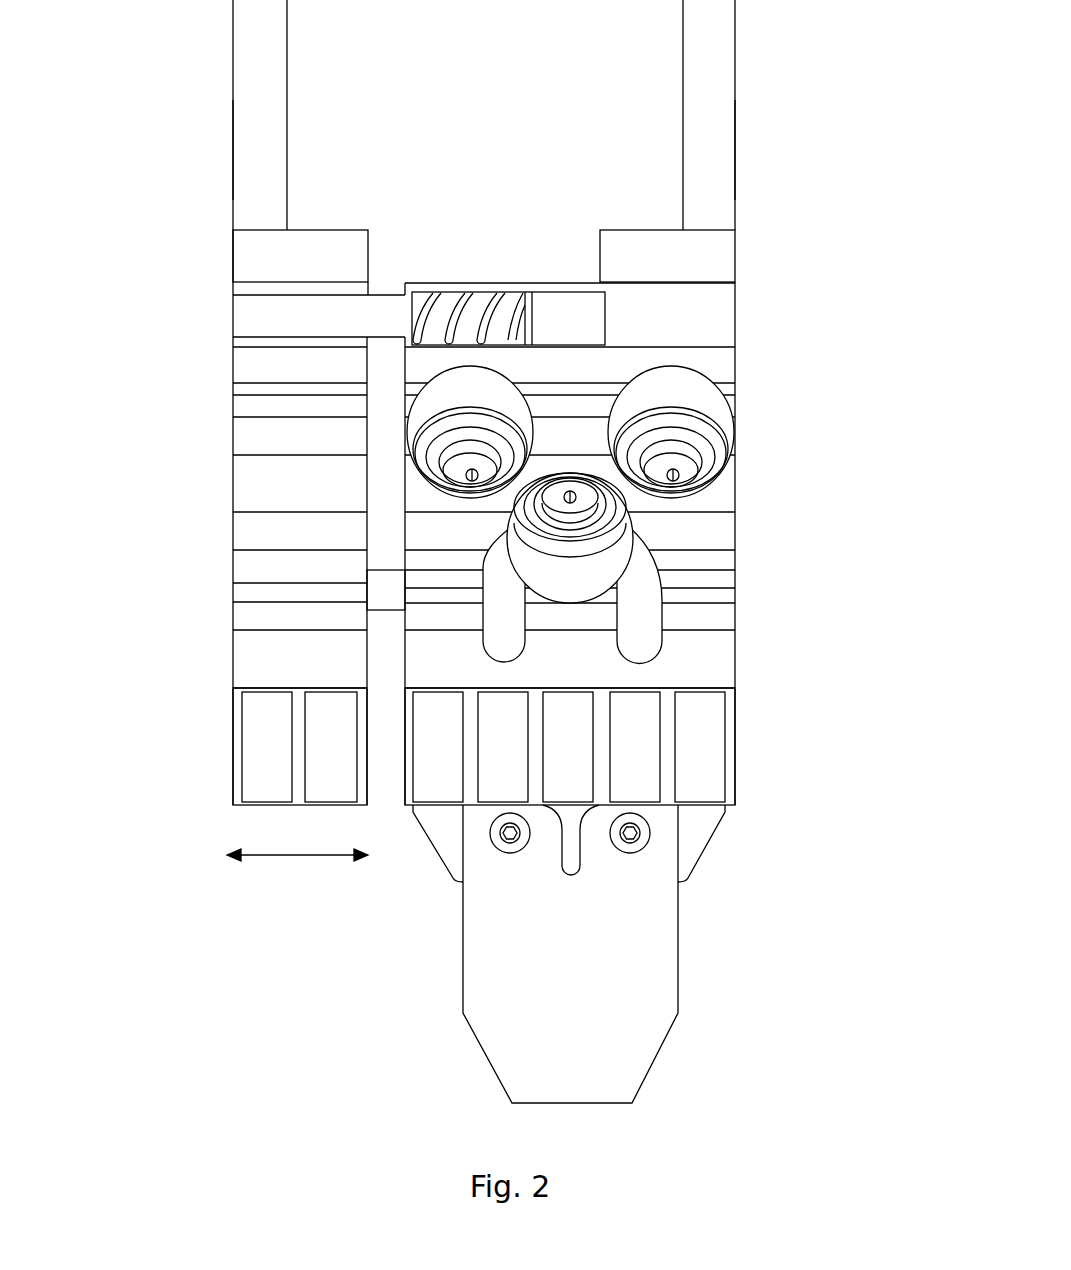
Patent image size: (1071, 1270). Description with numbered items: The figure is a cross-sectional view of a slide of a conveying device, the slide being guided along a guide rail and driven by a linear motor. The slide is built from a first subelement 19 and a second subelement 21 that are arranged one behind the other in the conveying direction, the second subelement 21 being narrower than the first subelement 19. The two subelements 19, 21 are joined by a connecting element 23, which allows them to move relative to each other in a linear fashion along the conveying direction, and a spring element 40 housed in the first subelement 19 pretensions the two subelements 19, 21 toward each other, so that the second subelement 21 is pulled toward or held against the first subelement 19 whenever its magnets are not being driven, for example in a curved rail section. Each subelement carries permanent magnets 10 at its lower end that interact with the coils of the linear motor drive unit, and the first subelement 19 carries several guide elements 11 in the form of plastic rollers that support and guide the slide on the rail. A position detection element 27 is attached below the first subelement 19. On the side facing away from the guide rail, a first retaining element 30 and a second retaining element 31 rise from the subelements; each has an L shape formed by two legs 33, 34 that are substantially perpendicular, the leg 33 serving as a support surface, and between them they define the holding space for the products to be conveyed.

The permanent magnets 10 is at (258, 763).
The guide elements 11 is at (588, 553).
The first subelement 19 is at (712, 527).
The second subelement 21 is at (283, 492).
The connecting element 23 is at (302, 320).
The position detection element 27 is at (640, 962).
The first retaining element 30 is at (712, 106).
The second retaining element 31 is at (257, 106).
The leg 33 is at (642, 247).
The leg 34 is at (720, 165).
The spring element 40 is at (422, 317).